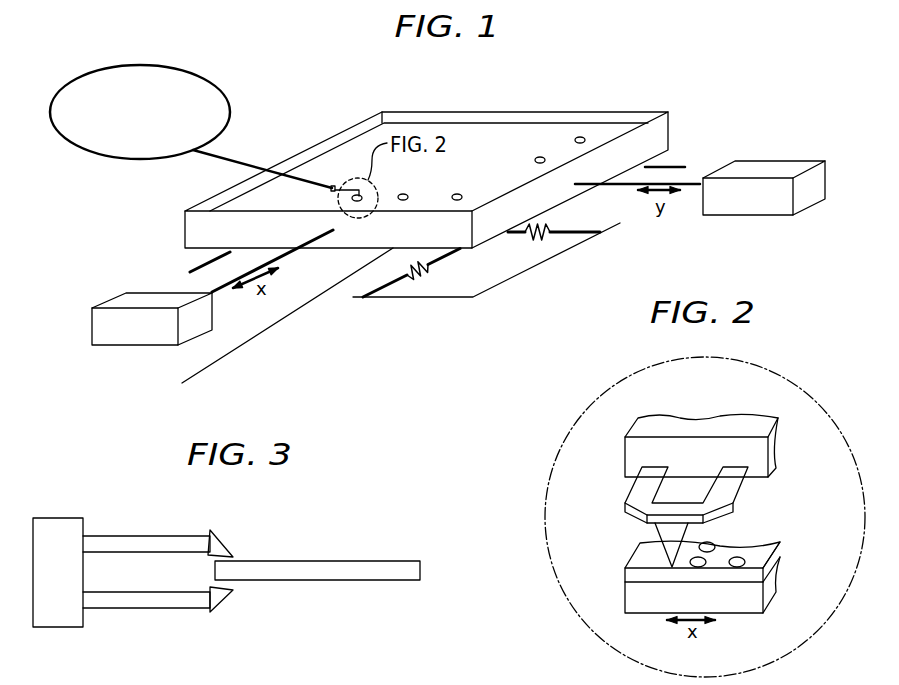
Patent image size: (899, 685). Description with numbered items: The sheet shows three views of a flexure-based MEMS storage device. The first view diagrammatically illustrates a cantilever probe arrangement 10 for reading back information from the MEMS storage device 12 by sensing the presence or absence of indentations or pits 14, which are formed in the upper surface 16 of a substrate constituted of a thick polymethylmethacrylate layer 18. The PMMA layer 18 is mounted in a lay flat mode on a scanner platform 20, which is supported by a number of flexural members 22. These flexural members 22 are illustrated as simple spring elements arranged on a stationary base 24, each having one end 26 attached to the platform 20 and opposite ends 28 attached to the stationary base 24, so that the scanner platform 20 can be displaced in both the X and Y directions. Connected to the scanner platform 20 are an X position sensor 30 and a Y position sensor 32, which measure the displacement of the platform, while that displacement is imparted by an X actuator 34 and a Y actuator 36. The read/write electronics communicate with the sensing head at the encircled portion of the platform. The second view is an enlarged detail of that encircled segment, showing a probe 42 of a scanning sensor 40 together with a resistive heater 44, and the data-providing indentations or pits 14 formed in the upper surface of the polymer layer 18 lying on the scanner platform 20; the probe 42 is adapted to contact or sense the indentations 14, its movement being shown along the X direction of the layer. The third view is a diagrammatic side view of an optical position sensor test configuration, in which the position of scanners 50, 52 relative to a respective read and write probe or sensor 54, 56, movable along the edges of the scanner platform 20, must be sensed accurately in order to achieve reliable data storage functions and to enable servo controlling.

In FIG. 1, the cantilever probe arrangement 10 is at (233, 111).
In FIG. 1, the MEMS storage device 12 is at (243, 200).
In FIG. 1, the indentations or pits 14 is at (403, 194).
In FIG. 2, the indentations or pits 14 is at (742, 557).
In FIG. 1, the upper surface 16 is at (612, 130).
In FIG. 2, the upper surface 16 is at (770, 547).
In FIG. 1, the polymethylmethacrylate (PMMA) layer 18 is at (658, 132).
In FIG. 2, the polymethylmethacrylate (PMMA) layer 18 is at (750, 573).
In FIG. 1, the scanner platform 20 is at (590, 188).
In FIG. 2, the scanner platform 20 is at (627, 573).
In FIG. 3, the scanner platform 20 is at (365, 558).
In FIG. 1, the flexural members 22 is at (425, 275).
In FIG. 1, the stationary base 24 is at (452, 297).
In FIG. 1, the one end 26 is at (436, 260).
In FIG. 1, the opposite ends 28 is at (378, 298).
In FIG. 1, the X position sensor 30 is at (178, 260).
In FIG. 1, the Y position sensor 32 is at (680, 166).
In FIG. 1, the X actuator 34 is at (100, 346).
In FIG. 1, the Y actuator 36 is at (808, 215).
In FIG. 1, the scanning sensor 40 is at (355, 178).
In FIG. 2, the scanning sensor 40 is at (748, 478).
In FIG. 2, the probe 42 is at (773, 457).
In FIG. 2, the resistive heater 44 is at (625, 513).
In FIG. 3, the scanner 50 is at (123, 533).
In FIG. 3, the scanner 52 is at (123, 610).
In FIG. 3, the read and write (R/W) probe or sensor 54 is at (223, 540).
In FIG. 3, the read and write (R/W) probe or sensor 56 is at (223, 600).